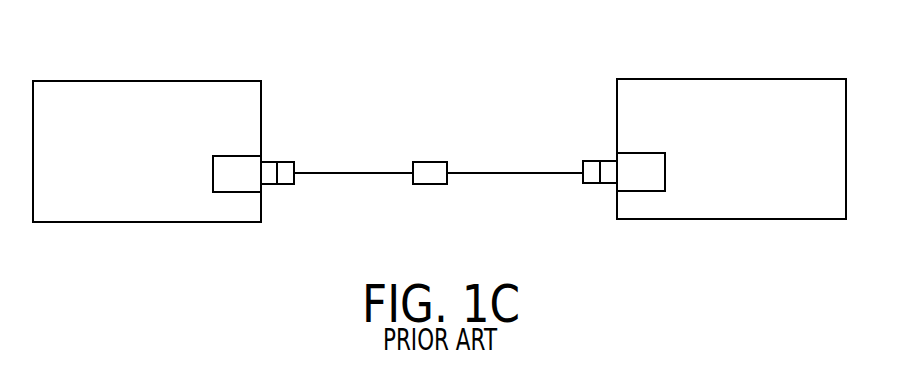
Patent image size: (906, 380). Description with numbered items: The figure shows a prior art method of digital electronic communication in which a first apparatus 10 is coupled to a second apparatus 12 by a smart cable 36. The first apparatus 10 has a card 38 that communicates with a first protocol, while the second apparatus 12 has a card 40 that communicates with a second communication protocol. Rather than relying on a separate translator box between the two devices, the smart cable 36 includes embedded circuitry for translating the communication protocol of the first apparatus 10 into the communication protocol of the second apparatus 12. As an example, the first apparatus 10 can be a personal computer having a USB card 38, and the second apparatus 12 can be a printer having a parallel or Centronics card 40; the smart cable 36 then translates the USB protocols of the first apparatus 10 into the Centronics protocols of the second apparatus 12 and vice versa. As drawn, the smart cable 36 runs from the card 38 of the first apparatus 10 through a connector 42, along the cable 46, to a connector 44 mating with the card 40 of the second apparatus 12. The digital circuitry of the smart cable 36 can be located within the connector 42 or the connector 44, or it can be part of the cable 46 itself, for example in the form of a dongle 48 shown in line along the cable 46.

The first apparatus 10 is at (213, 81).
The second apparatus 12 is at (695, 79).
The smart cable 36 is at (473, 112).
The card 38 is at (235, 192).
The card 40 is at (632, 191).
The connector 42 is at (287, 185).
The connector 44 is at (590, 185).
The cable 46 is at (507, 175).
The dongle 48 is at (428, 185).